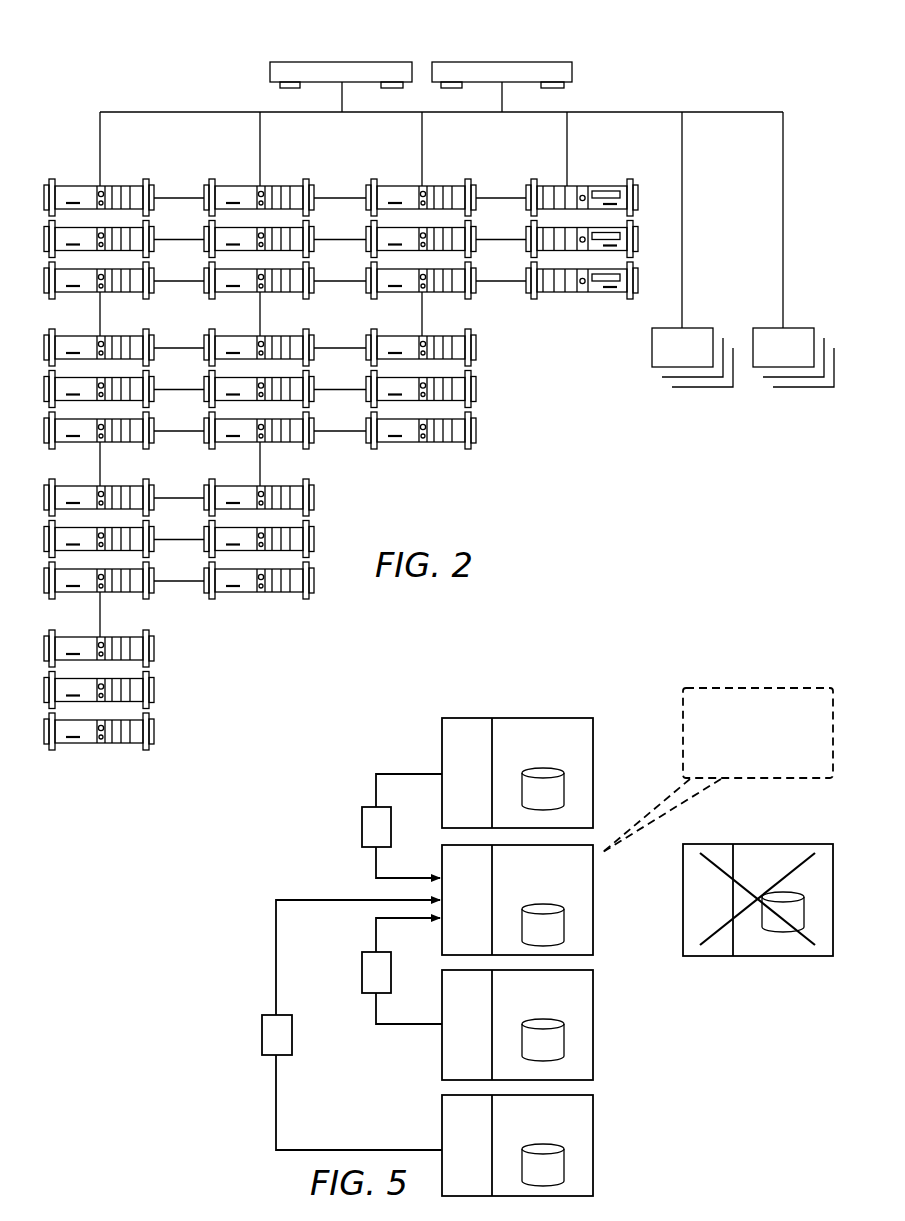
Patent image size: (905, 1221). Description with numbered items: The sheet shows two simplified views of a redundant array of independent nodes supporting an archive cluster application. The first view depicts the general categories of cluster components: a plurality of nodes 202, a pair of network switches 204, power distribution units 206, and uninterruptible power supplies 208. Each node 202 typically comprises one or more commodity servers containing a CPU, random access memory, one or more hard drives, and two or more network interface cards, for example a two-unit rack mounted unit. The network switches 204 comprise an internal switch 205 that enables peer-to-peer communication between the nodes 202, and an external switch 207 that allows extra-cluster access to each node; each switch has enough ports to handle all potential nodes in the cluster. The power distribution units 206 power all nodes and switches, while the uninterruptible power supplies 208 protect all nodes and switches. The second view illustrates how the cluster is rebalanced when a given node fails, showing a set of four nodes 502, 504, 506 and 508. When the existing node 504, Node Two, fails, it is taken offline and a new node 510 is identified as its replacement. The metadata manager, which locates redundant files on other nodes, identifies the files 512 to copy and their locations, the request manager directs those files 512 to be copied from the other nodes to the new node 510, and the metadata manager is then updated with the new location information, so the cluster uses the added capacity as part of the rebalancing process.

In FIG. 2, the node 202 is at (80, 177).
In FIG. 2, the network switches 204 is at (466, 63).
In FIG. 2, the internal switch 205 is at (328, 62).
In FIG. 2, the external switch 207 is at (535, 62).
In FIG. 2, the power distribution unit 206 is at (698, 327).
In FIG. 2, the uninterruptible power supply 208 is at (798, 327).
In FIG. 5, the node 502 is at (594, 764).
In FIG. 5, the existing node 504 is at (683, 922).
In FIG. 5, the node 506 is at (594, 1036).
In FIG. 5, the node 508 is at (594, 1161).
In FIG. 5, the new node 510 is at (594, 890).
In FIG. 5, the files 512 is at (362, 826).